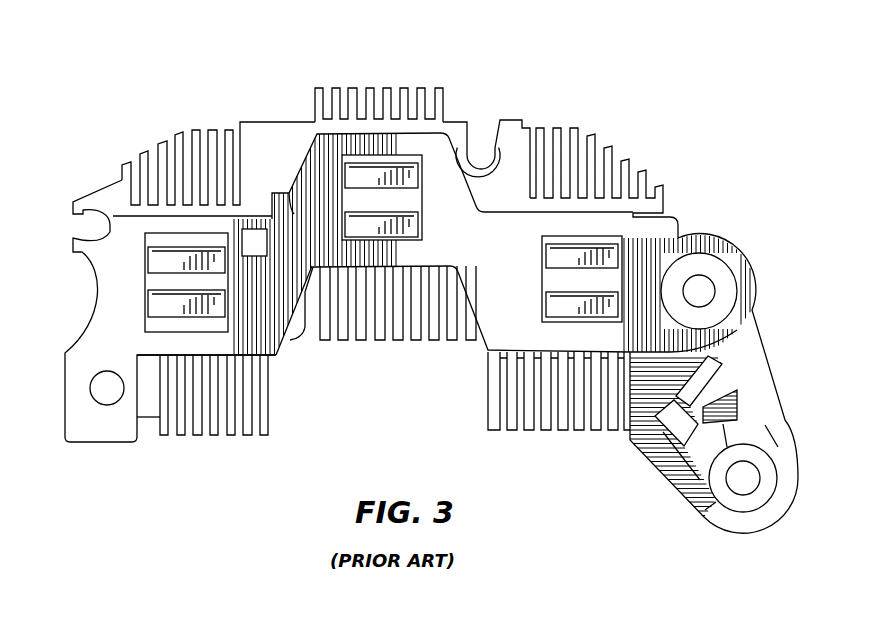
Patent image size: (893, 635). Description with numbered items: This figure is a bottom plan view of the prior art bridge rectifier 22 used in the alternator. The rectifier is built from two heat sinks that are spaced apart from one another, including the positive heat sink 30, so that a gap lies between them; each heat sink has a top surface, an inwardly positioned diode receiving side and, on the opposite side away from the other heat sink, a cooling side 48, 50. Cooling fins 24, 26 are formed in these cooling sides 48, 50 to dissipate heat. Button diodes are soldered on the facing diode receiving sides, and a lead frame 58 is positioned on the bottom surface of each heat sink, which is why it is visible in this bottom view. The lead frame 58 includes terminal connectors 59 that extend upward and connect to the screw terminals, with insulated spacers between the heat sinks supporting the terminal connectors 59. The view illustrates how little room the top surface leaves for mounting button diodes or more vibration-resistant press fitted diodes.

The prior art bridge rectifier 22 is at (489, 96).
The cooling fins 24 is at (585, 132).
The cooling fins 26 is at (563, 432).
The positive heat sink 30 is at (290, 370).
The cooling side 48 is at (296, 113).
The cooling side 50 is at (433, 356).
The lead frame 58 is at (648, 233).
The terminal connectors 59 is at (603, 310).